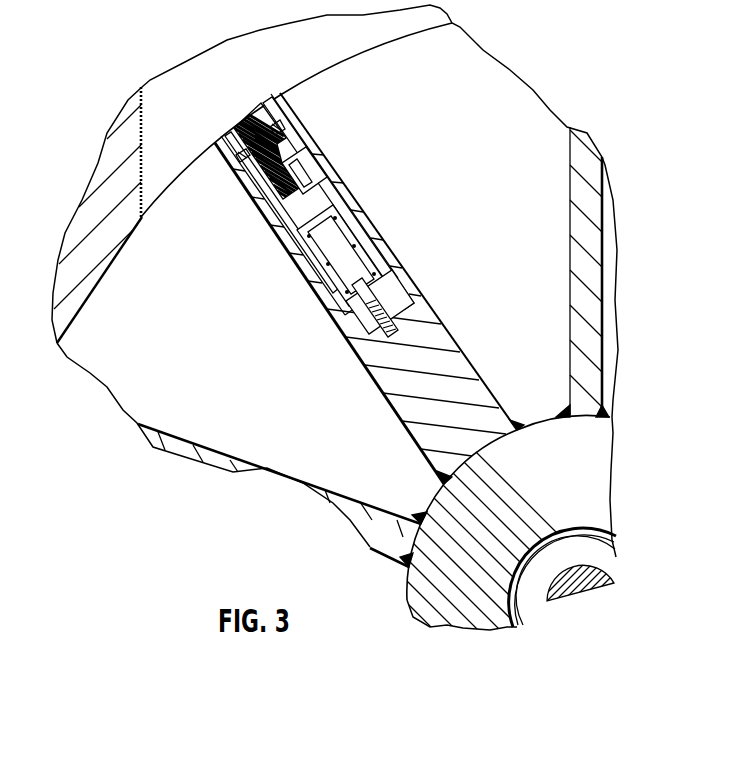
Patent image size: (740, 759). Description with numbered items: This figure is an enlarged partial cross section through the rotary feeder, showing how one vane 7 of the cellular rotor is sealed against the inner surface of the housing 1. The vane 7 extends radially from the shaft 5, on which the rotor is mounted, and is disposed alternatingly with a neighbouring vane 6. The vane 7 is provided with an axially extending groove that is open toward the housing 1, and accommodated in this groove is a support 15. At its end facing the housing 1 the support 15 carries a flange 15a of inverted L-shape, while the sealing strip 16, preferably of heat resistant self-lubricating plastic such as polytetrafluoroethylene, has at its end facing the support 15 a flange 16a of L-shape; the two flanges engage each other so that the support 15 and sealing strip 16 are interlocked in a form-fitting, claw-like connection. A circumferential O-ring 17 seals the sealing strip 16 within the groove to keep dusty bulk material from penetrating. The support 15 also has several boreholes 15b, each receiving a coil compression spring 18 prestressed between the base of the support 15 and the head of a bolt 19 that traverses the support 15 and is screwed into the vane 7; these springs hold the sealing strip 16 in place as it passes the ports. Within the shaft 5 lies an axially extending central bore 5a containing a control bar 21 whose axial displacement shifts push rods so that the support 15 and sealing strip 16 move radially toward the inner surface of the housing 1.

The housing 1 is at (102, 192).
The shaft 5 is at (433, 607).
The central bore 5a is at (515, 618).
The vane 6 is at (577, 198).
The vane 7 is at (363, 348).
The support 15 is at (343, 205).
The flange 15a is at (298, 176).
The boreholes 15b is at (310, 277).
The sealing strip 16 is at (295, 172).
The flange 16a is at (288, 196).
The O-ring 17 is at (280, 127).
The compression spring 18 is at (347, 237).
The bolt 19 is at (387, 285).
The control bar 21 is at (568, 597).